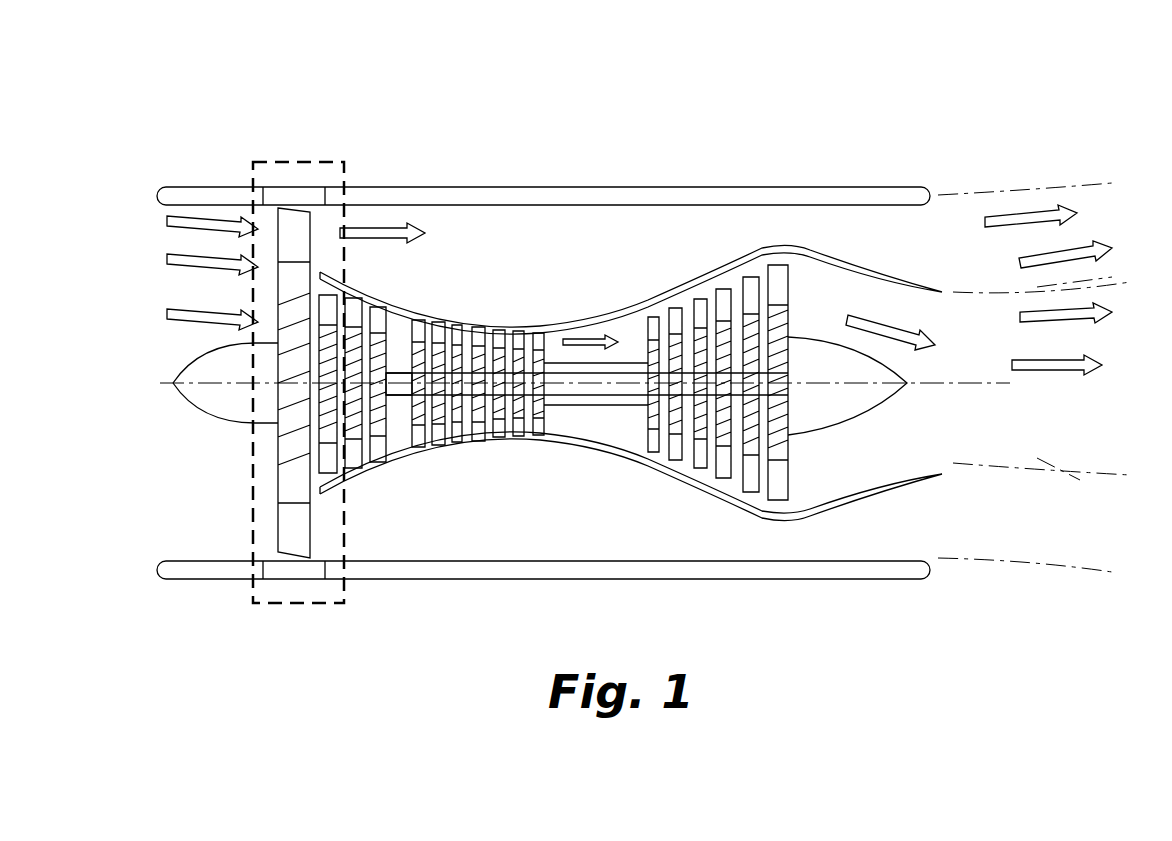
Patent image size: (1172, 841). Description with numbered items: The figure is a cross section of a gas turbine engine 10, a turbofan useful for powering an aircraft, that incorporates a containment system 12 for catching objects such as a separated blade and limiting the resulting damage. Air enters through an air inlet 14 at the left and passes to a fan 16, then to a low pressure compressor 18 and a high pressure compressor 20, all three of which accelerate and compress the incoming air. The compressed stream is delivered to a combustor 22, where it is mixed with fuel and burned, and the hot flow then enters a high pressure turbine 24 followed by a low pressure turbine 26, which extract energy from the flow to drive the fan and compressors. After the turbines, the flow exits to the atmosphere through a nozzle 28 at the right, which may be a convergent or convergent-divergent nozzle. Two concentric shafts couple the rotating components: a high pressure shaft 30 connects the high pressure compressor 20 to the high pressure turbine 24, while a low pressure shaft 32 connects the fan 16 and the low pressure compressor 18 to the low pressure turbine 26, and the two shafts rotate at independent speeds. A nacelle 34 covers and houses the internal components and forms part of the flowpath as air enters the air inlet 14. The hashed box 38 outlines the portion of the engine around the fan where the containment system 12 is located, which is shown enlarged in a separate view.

The gas turbine engine 10 is at (685, 120).
The containment system 12 is at (308, 190).
The air inlet 14 is at (178, 293).
The fan 16 is at (290, 222).
The low pressure compressor 18 is at (350, 460).
The high pressure compressor 20 is at (477, 333).
The combustor 22 is at (592, 425).
The high pressure turbine 24 is at (653, 318).
The low pressure turbine 26 is at (750, 487).
The nozzle 28 is at (855, 463).
The high pressure shaft 30 is at (615, 368).
The low pressure shaft 32 is at (550, 385).
The nacelle 34 is at (820, 186).
The hashed box 38 is at (253, 164).